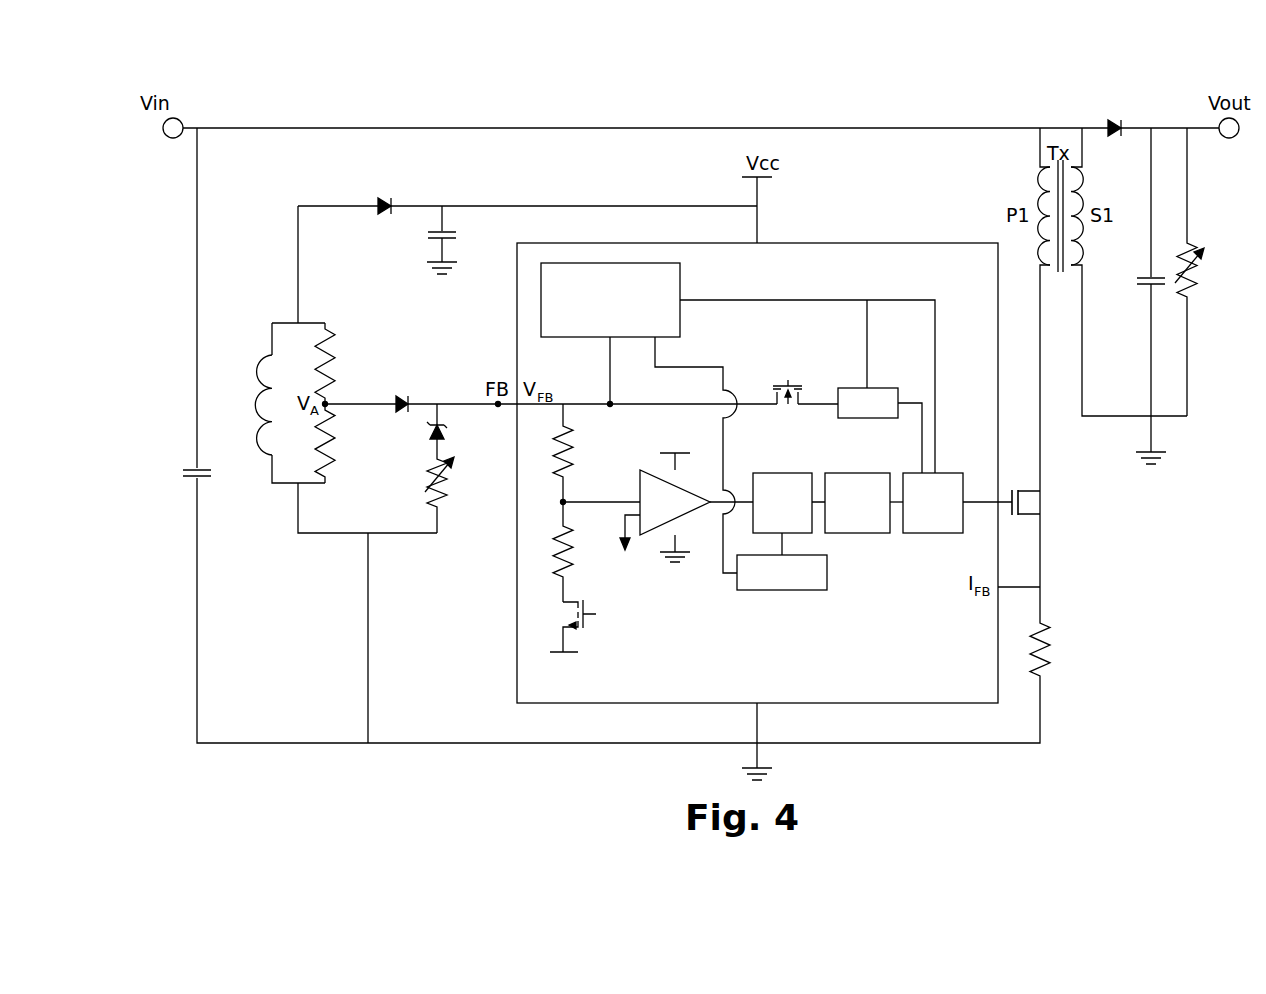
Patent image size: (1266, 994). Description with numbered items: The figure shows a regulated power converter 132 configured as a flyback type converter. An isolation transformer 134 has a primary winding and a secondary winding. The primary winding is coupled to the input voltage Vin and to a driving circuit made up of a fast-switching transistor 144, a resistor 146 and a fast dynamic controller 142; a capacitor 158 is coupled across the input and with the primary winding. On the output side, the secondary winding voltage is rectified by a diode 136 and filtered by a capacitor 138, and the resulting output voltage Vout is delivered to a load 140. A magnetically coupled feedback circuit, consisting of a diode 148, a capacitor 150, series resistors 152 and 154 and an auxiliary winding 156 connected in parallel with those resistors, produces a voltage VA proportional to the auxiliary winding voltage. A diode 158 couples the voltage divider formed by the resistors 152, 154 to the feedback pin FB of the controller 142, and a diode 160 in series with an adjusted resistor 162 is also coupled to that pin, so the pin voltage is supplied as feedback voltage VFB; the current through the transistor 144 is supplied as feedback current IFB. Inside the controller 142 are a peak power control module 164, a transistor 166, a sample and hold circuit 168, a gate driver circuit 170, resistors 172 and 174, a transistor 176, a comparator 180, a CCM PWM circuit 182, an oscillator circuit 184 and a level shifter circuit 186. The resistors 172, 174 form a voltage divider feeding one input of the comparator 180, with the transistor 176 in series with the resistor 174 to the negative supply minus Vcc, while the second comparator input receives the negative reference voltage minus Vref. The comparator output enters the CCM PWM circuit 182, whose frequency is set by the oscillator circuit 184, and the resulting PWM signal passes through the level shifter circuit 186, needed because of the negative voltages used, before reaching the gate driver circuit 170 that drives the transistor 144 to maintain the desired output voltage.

The power converter 132 is at (1008, 62).
The isolation transformer 134 is at (1060, 140).
The diode 136 is at (1115, 117).
The capacitor 138 is at (1148, 286).
The load 140 is at (1200, 270).
The controller 142 is at (880, 243).
The transistor 144 is at (1012, 492).
The resistor 146 is at (1051, 658).
The diode 148 is at (385, 198).
The capacitor 150 is at (430, 256).
The resistor 152 is at (335, 377).
The resistor 154 is at (335, 452).
The auxiliary winding 156 is at (258, 405).
The capacitor and diode 158 is at (402, 397).
The diode 160 is at (442, 434).
The adjusted resistor 162 is at (444, 492).
The peak power control module 164 is at (682, 273).
The transistor 166 is at (776, 380).
The sample and hold circuit 168 is at (886, 388).
The gate driver circuit 170 is at (948, 473).
The resistor 172 is at (569, 464).
The resistor 174 is at (553, 567).
The transistor 176 is at (595, 606).
The comparator 180 is at (697, 510).
The CCM PWM circuit 182 is at (785, 473).
The oscillator circuit 184 is at (795, 590).
The level shifter circuit 186 is at (862, 473).